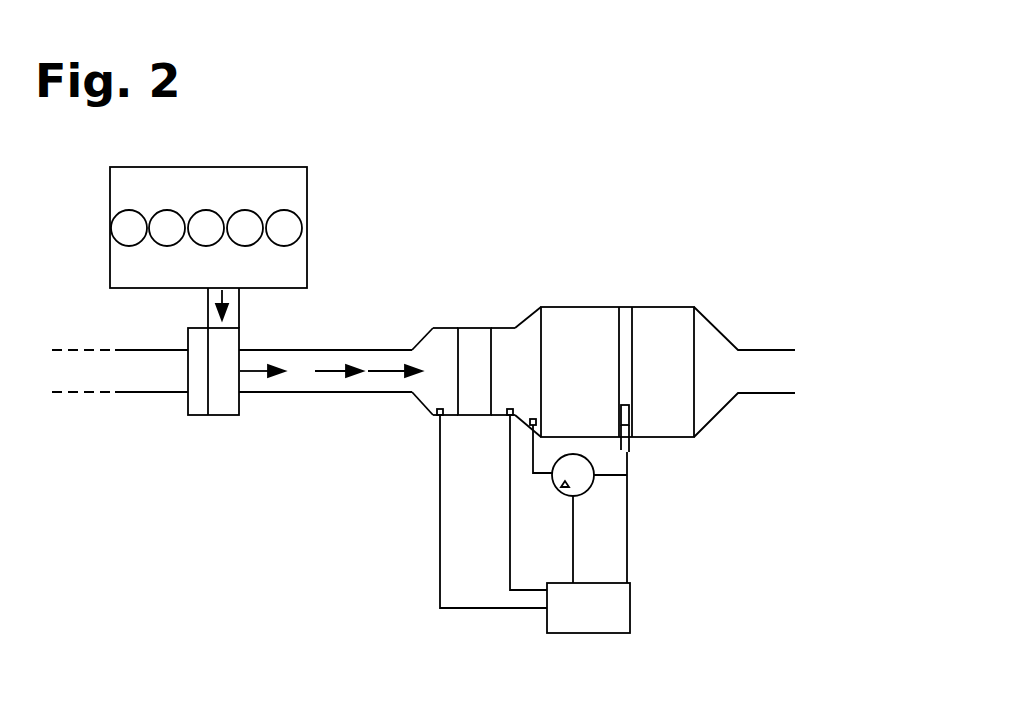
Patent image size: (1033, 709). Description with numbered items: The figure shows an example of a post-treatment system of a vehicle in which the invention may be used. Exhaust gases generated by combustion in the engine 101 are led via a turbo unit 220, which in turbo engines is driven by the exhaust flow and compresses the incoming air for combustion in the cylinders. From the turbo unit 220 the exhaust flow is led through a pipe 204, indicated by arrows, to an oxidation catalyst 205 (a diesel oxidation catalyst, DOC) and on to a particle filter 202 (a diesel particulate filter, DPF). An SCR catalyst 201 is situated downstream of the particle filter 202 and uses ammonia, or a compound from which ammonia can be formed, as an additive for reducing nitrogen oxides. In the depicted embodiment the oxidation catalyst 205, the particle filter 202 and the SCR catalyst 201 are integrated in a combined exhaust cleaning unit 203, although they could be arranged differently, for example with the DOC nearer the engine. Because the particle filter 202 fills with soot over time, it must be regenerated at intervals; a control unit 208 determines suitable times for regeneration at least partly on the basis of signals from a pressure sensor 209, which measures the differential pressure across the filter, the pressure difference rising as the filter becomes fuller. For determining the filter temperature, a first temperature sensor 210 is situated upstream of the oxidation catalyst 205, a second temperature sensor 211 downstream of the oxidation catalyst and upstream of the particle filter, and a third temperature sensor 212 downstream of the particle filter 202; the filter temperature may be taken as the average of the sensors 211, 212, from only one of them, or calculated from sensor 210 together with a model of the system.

The engine 101 is at (268, 178).
The turbo unit 220 is at (204, 426).
The pipe 204 is at (378, 358).
The oxidation catalyst 205 is at (491, 328).
The combined exhaust cleaning unit 203 is at (684, 292).
The particle filter 202 is at (595, 315).
The SCR catalyst 201 is at (688, 325).
The first temperature sensor 210 is at (438, 418).
The second temperature sensor 211 is at (509, 418).
The third temperature sensor 212 is at (633, 420).
The pressure sensor 209 is at (590, 483).
The control unit 208 is at (582, 627).